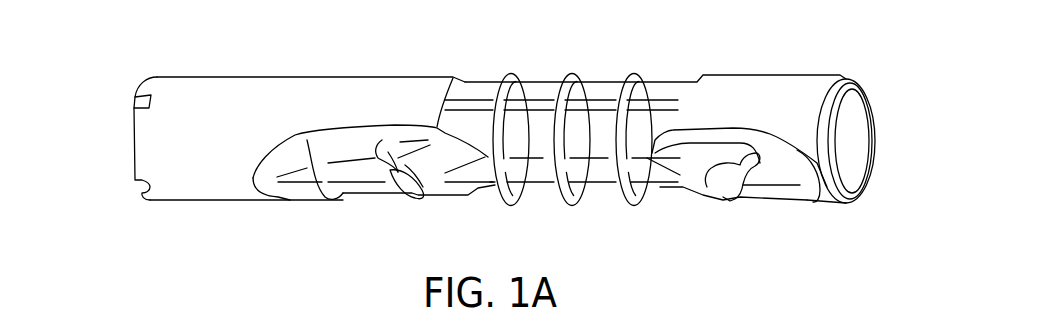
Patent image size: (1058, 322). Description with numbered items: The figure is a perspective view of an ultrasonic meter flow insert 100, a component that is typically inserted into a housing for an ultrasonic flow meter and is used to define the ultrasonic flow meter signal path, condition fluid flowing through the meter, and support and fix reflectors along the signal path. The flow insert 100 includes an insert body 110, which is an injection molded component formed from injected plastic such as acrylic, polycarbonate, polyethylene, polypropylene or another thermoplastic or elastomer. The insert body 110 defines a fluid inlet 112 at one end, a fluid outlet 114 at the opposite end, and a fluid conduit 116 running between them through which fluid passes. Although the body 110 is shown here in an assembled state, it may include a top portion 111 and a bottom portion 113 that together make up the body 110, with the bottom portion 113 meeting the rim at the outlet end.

The ultrasonic meter flow insert 100 is at (868, 42).
The insert body 110 is at (384, 77).
The top portion 111 is at (873, 105).
The fluid inlet 112 is at (132, 155).
The bottom portion 113 is at (843, 203).
The fluid outlet 114 is at (873, 145).
The fluid conduit 116 is at (228, 148).